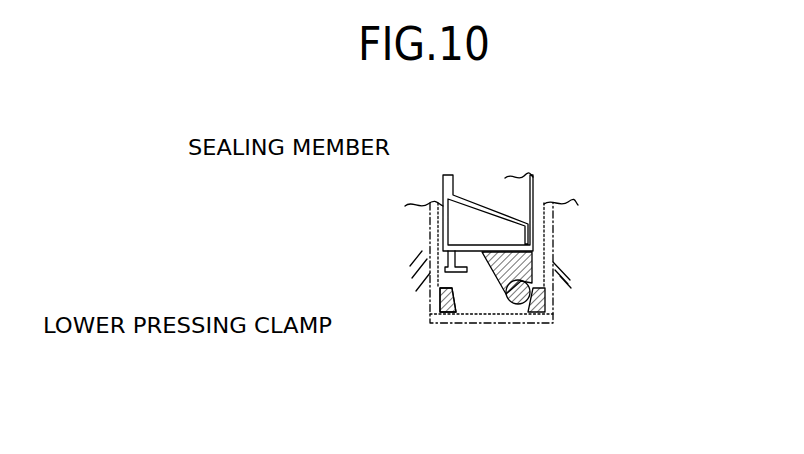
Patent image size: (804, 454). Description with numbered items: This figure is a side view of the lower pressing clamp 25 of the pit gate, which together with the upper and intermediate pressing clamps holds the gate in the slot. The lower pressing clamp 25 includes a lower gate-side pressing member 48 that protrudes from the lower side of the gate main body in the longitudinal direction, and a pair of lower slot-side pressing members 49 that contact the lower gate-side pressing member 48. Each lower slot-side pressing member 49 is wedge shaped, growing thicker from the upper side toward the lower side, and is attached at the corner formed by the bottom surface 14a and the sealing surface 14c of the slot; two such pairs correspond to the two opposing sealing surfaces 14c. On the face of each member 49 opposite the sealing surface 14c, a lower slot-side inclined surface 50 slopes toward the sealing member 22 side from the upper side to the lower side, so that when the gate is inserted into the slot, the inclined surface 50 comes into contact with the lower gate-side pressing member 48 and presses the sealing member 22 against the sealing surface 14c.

The sealing member 22 is at (443, 185).
The lower pressing clamp 25 is at (408, 297).
The lower gate-side pressing member 48 is at (524, 262).
The lower slot-side pressing members 49 is at (440, 300).
The lower slot-side inclined surface 50 is at (466, 305).
The bottom surface 14a is at (492, 318).
The sealing surfaces 14c is at (428, 290).